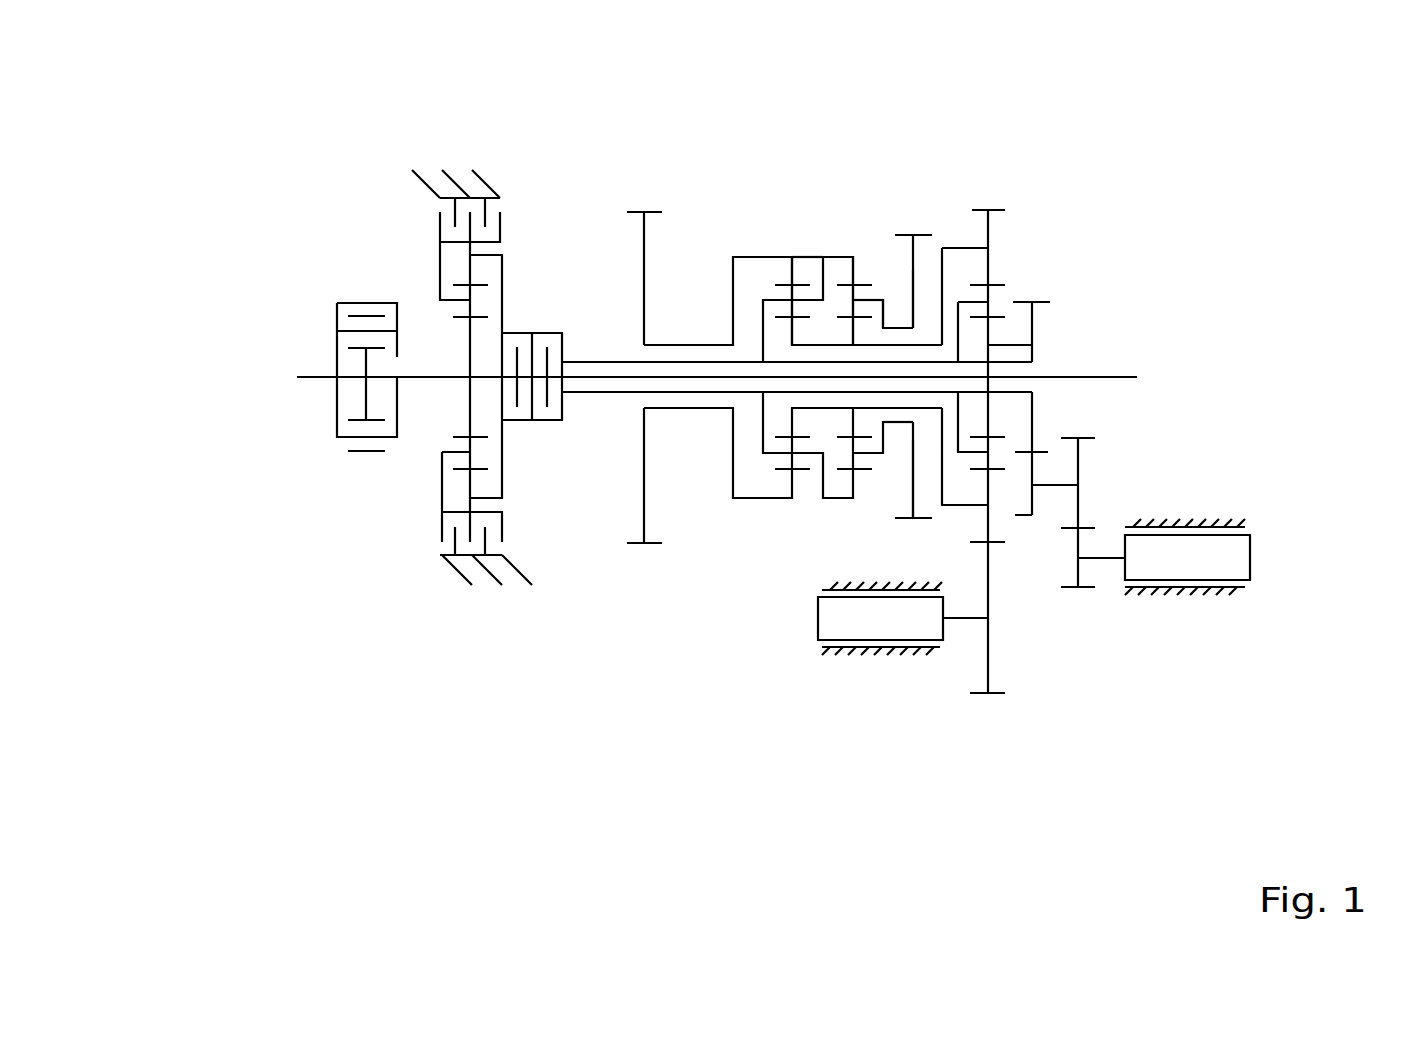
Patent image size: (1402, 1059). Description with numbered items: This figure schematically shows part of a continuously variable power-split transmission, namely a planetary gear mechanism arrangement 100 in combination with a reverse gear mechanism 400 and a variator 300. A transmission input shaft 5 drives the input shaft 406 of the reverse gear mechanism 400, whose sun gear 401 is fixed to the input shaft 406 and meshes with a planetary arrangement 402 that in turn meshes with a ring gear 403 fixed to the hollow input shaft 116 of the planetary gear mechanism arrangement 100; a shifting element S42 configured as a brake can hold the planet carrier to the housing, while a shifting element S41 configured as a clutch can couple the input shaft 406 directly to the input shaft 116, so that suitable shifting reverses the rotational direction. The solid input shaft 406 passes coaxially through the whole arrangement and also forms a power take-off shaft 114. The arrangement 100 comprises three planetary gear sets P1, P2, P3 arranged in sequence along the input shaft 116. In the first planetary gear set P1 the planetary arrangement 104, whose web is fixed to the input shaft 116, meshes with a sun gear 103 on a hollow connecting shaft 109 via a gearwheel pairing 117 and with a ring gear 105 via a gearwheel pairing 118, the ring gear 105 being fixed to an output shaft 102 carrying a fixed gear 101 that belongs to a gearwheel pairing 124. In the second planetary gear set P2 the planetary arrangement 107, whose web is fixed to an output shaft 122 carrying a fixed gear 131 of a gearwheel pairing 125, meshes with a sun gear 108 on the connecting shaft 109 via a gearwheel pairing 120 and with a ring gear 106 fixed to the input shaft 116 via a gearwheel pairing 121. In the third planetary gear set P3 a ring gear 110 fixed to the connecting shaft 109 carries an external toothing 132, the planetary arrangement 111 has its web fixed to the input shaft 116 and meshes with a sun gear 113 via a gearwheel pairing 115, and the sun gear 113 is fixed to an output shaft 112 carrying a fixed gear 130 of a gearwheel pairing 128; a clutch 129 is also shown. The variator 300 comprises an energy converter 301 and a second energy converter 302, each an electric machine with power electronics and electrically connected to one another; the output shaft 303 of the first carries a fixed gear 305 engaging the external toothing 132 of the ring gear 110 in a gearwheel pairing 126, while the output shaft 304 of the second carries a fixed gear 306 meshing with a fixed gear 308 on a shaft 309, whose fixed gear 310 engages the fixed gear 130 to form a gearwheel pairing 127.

The transmission input shaft 5 is at (318, 377).
The planetary gear mechanism arrangement 100 is at (1182, 145).
The fixed gear 101 is at (643, 293).
The output shaft 102 is at (690, 345).
The sun gear 103 is at (792, 340).
The planetary arrangement 104 is at (790, 293).
The ring gear 105 is at (858, 300).
The ring gear 106 is at (793, 260).
The planetary arrangement 107 is at (883, 300).
The sun gear 108 is at (855, 343).
The connecting shaft 109 is at (915, 300).
The ring gear 110 is at (989, 245).
The planetary arrangement 111 is at (1000, 293).
The output shaft 112 is at (1034, 367).
The sun gear 113 is at (1034, 345).
The power take-off shaft 114 is at (1138, 377).
The gearwheel pairing 115 is at (993, 427).
The input shaft 116 is at (600, 393).
The gearwheel pairing 117 is at (787, 440).
The gearwheel pairing 118 is at (847, 440).
The gearwheel pairing 120 is at (785, 478).
The gearwheel pairing 121 is at (862, 478).
The output shaft 122 is at (900, 423).
The gearwheel pairing 124 is at (640, 206).
The gearwheel pairing 125 is at (913, 230).
The gearwheel pairing 126 is at (988, 650).
The gearwheel pairing 127 is at (1040, 437).
The gearwheel pairing 128 is at (1033, 296).
The clutch 129 is at (992, 477).
The fixed gear 130 is at (1033, 330).
The fixed gear 131 is at (914, 480).
The external toothing 132 is at (992, 226).
The variator 300 is at (1203, 662).
The energy converter 301 is at (867, 630).
The second energy converter 302 is at (1240, 568).
The output shaft 303 is at (975, 619).
The output shaft 304 is at (1092, 560).
The fixed gear 305 is at (993, 553).
The fixed gear 306 is at (1079, 560).
The fixed gear 308 is at (1079, 459).
The shaft 309 is at (1060, 488).
The fixed gear 310 is at (1015, 516).
The reverse gear mechanism 400 is at (381, 526).
The sun gear 401 is at (470, 362).
The planetary arrangement 402 is at (470, 298).
The ring gear 403 is at (470, 272).
The input shaft 406 is at (443, 380).
The shifting element S41 is at (537, 330).
The shifting element S42 is at (435, 556).
The first planetary gear set P1 is at (793, 228).
The second planetary gear set P2 is at (855, 228).
The third planetary gear set P3 is at (988, 200).